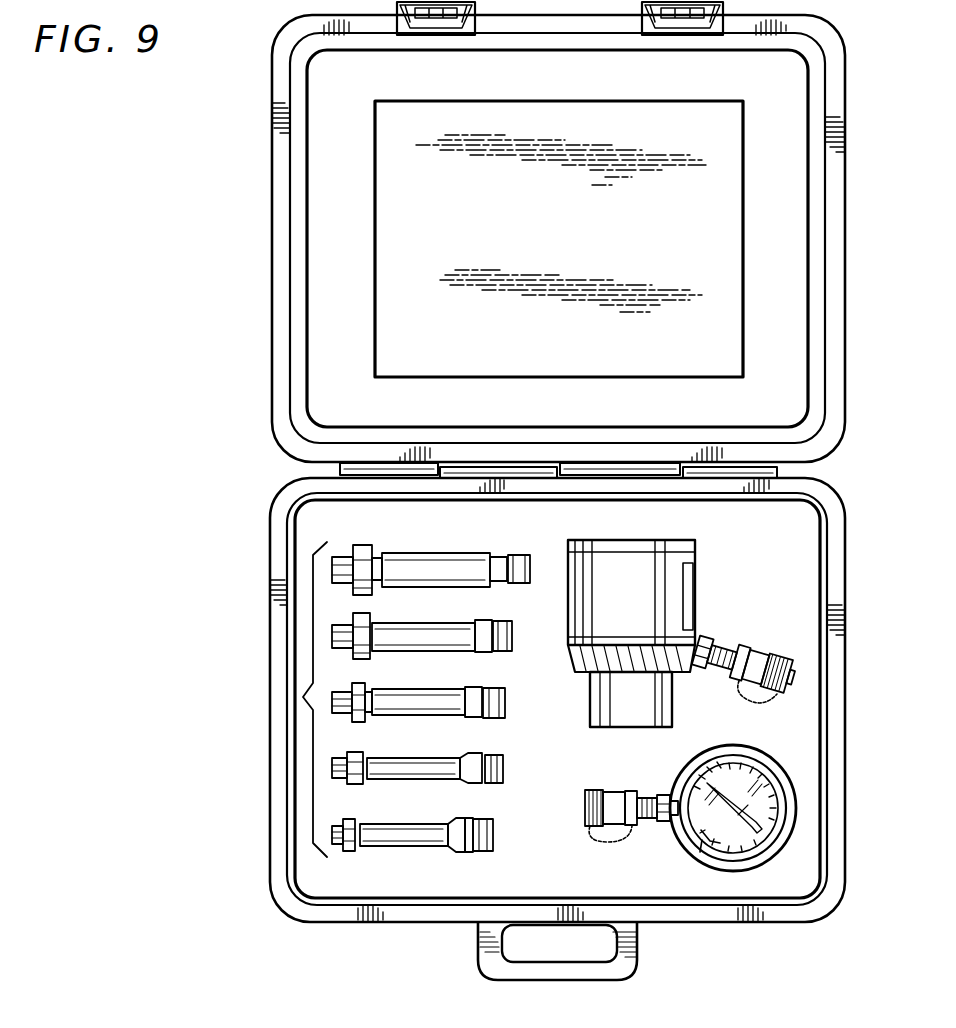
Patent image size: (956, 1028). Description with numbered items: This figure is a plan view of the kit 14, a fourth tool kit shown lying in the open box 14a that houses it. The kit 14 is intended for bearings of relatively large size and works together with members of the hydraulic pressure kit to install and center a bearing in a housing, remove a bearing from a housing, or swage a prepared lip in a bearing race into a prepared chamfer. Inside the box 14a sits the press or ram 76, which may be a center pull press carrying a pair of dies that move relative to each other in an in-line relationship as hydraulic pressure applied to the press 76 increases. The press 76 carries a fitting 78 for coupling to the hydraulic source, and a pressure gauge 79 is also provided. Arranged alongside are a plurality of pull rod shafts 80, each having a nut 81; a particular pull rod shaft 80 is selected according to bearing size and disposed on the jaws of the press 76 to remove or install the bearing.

The kit 14 is at (848, 553).
The box 14a is at (850, 708).
The press or ram 76 is at (697, 580).
The fitting 78 is at (760, 656).
The pressure gauge 79 is at (685, 773).
The pull rod shaft 80 is at (303, 695).
The nut 81 is at (366, 545).